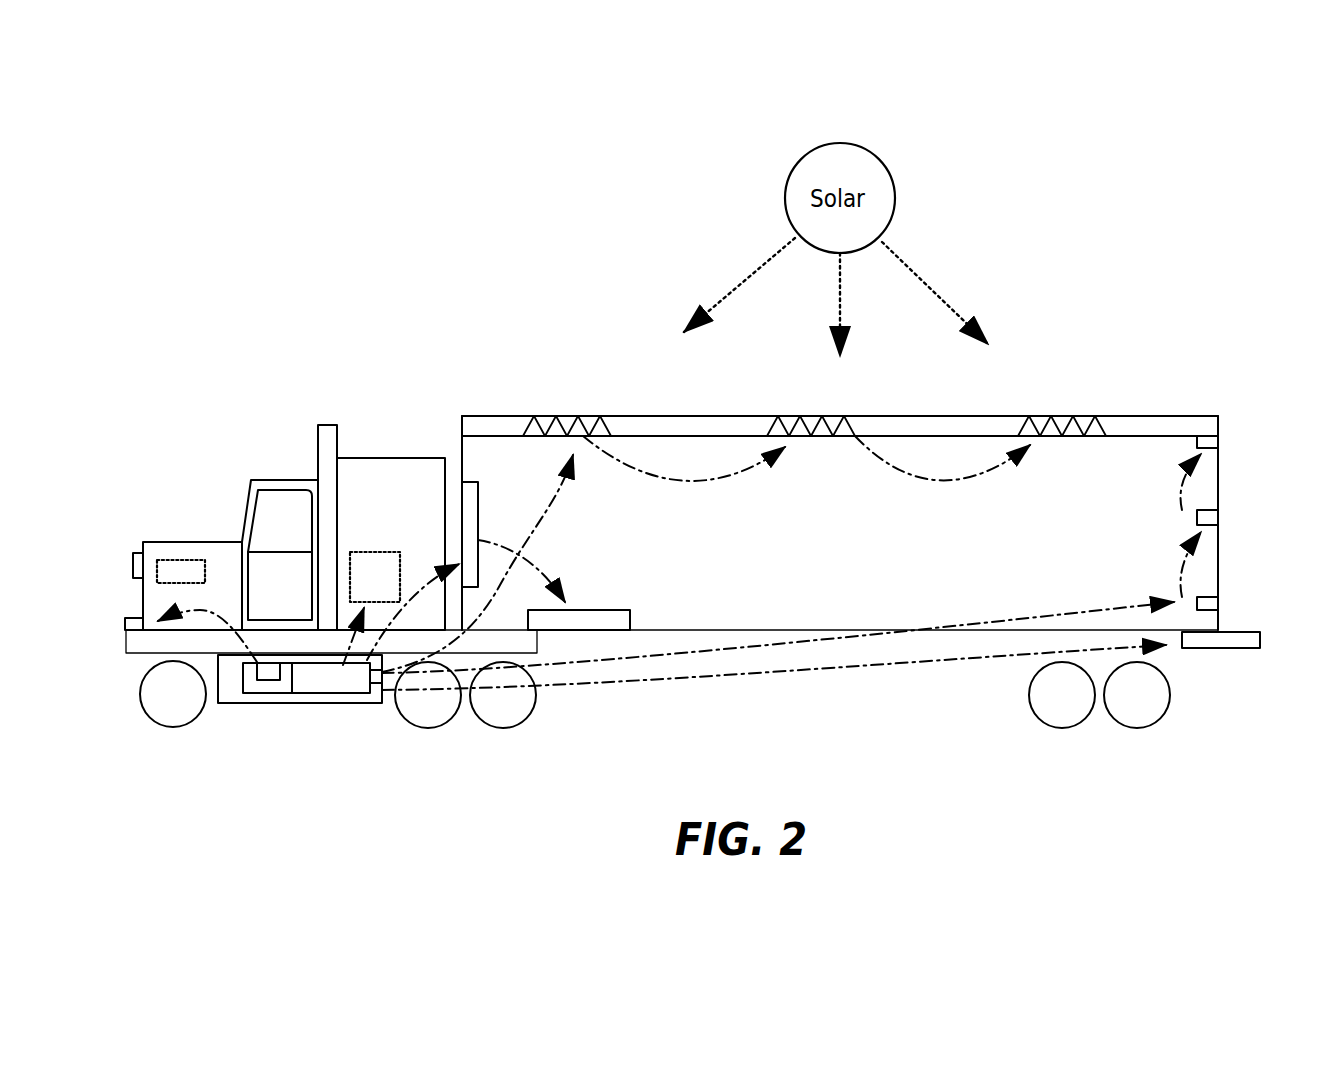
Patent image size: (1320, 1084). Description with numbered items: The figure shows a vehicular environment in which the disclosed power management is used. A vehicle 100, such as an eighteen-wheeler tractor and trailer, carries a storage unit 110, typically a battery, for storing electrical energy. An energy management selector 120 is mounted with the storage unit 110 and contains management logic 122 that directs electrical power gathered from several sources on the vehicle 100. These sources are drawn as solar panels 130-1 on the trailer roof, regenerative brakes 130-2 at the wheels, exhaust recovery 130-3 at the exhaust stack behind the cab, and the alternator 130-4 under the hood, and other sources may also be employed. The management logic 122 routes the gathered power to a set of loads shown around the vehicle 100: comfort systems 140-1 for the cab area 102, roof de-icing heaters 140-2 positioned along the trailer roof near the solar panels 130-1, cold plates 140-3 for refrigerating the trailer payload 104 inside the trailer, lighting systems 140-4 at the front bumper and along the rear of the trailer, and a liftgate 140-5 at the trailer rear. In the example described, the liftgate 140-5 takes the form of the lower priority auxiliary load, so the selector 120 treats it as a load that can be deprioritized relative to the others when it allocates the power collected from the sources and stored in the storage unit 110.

The vehicle 100 is at (225, 250).
The cab area 102 is at (375, 472).
The trailer payload 104 is at (857, 528).
The storage unit 110 is at (358, 688).
The energy management selector 120 is at (252, 695).
The management logic 122 is at (268, 683).
The solar panels 130-1 is at (482, 416).
The regenerative brakes 130-2 is at (497, 698).
The exhaust recovery 130-3 is at (318, 448).
The alternator 130-4 is at (187, 570).
The comfort systems 140-1 is at (380, 565).
The roof de-icing heaters 140-2 is at (567, 416).
The cold plates 140-3 is at (478, 512).
The lighting systems 140-4 is at (133, 622).
The liftgate 140-5 is at (1252, 648).